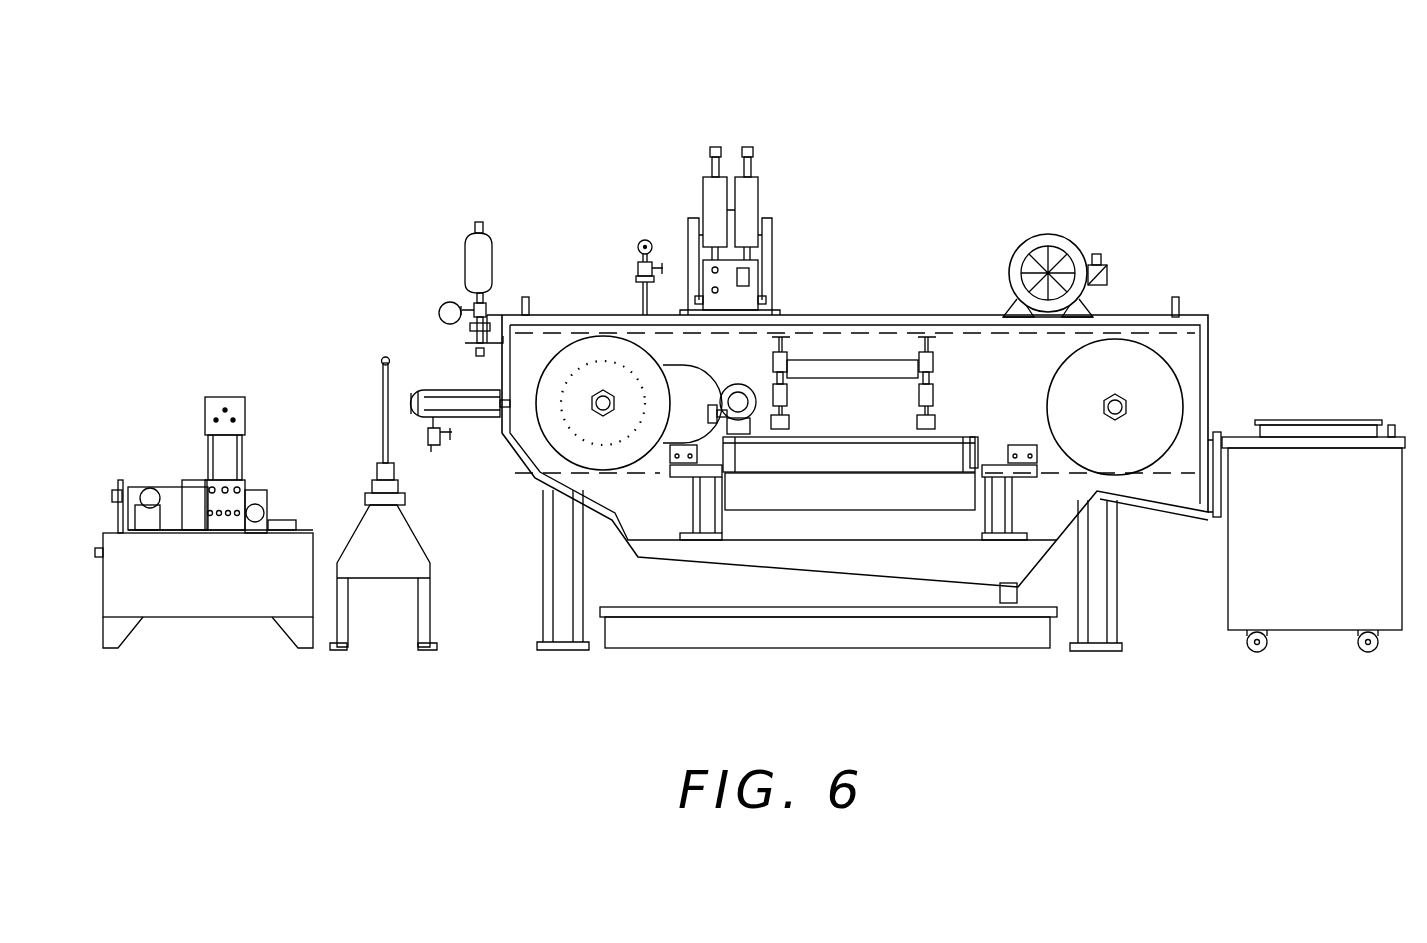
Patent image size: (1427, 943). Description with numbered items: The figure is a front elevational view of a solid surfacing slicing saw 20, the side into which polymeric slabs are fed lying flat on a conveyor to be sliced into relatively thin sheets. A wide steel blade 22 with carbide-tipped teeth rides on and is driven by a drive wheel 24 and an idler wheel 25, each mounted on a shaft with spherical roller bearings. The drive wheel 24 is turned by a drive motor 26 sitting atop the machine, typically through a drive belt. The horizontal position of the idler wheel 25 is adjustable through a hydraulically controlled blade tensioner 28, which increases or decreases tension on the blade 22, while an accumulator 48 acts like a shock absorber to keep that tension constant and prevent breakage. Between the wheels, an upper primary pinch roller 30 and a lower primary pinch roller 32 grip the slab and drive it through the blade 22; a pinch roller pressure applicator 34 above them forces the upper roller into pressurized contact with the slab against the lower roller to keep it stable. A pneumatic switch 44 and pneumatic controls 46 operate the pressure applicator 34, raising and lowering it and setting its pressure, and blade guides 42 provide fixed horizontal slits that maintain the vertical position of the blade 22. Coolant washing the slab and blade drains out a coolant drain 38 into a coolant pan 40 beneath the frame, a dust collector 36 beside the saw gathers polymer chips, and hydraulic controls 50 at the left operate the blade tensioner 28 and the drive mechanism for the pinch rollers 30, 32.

The saw 20 is at (333, 251).
The blade 22 is at (985, 332).
The drive wheel 24 is at (1133, 372).
The idler wheel 25 is at (583, 363).
The drive motor 26 is at (1085, 248).
The blade tensioner 28 is at (457, 397).
The upper primary pinch roller 30 is at (877, 495).
The lower primary pinch roller 32 is at (918, 455).
The pinch roller pressure applicator 34 is at (850, 370).
The dust collector 36 is at (1305, 463).
The coolant drain 38 is at (1020, 600).
The coolant pan 40 is at (692, 633).
The blade guides 42 is at (730, 477).
The pneumatic switch 44 is at (643, 243).
The pneumatic controls 46 is at (708, 180).
The accumulator 48 is at (487, 260).
The hydraulic controls 50 is at (312, 732).